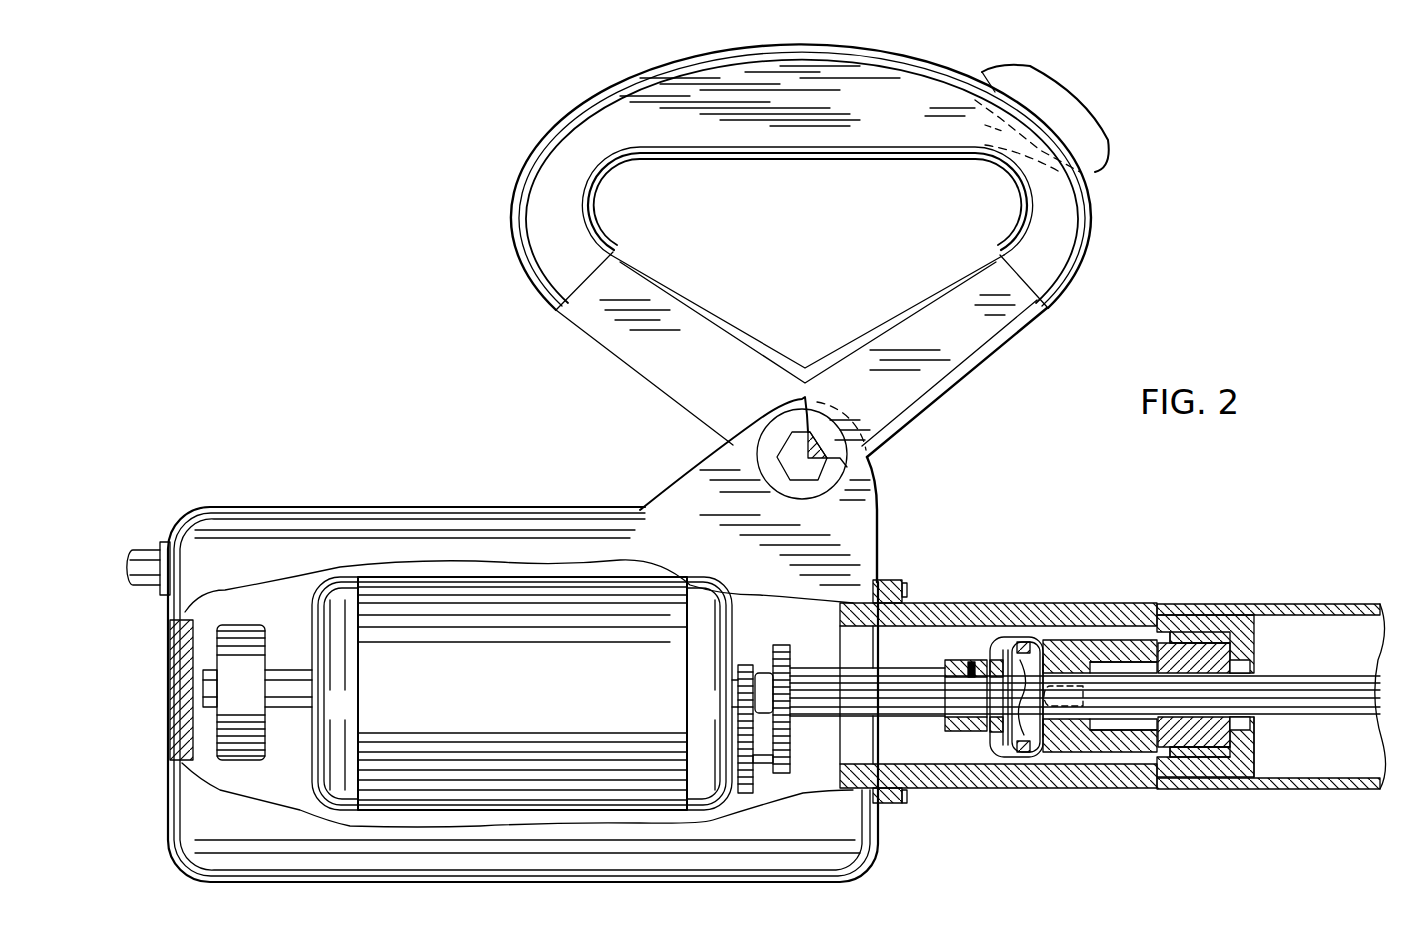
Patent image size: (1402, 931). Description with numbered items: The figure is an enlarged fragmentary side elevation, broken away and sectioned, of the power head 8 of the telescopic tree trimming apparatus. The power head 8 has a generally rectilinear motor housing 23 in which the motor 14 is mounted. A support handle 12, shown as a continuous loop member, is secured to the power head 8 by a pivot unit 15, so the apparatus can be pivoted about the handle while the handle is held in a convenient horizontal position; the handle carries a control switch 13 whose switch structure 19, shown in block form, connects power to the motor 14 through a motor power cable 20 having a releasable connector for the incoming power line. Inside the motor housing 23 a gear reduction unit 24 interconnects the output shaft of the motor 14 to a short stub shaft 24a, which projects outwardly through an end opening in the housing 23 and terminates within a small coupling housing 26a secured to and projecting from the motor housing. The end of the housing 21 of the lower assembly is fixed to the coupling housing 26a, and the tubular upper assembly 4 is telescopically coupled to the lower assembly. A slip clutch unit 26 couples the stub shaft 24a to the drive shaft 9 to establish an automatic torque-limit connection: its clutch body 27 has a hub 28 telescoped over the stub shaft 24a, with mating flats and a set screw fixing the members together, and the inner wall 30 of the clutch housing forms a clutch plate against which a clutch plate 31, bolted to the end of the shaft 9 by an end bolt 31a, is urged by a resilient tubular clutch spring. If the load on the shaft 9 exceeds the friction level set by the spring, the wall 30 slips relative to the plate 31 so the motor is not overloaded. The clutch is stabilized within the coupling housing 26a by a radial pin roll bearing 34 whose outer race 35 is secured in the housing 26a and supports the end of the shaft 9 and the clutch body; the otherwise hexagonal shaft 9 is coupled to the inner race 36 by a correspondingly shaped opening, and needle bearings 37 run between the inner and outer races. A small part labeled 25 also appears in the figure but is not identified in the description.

The upper assembly 4 is at (1160, 603).
The power head 8 is at (882, 556).
The drive shaft 9 is at (1337, 688).
The support handle 12 is at (970, 376).
The control switch 13 is at (1100, 120).
The motor 14 is at (537, 578).
The pivot unit 15 is at (848, 465).
The switch structure 19 is at (972, 172).
The motor power cable 20 is at (145, 550).
The housing 21 is at (1273, 615).
The motor housing 23 is at (745, 838).
The gear reduction unit 24 is at (763, 655).
The stub shaft 24a is at (920, 717).
The screw 25 is at (910, 800).
The slip clutch unit 26 is at (1093, 750).
The coupling housing 26a is at (1068, 563).
The clutch body 27 is at (978, 735).
The hub 28 is at (973, 660).
The inner wall 30 is at (1017, 757).
The clutch plate 31 is at (1027, 638).
The end bolt 31a is at (997, 637).
The bearing 34 is at (1207, 765).
The outer race 35 is at (1273, 763).
The inner race 36 is at (1200, 642).
The needle bearings 37 is at (1207, 642).